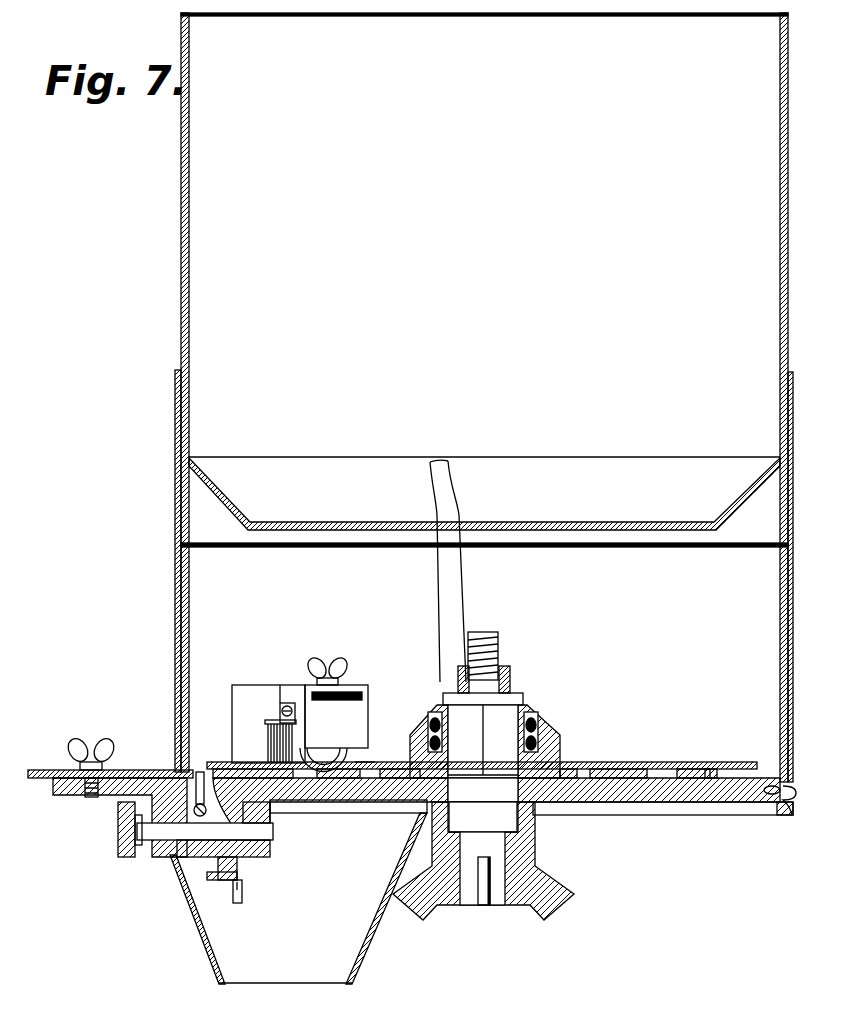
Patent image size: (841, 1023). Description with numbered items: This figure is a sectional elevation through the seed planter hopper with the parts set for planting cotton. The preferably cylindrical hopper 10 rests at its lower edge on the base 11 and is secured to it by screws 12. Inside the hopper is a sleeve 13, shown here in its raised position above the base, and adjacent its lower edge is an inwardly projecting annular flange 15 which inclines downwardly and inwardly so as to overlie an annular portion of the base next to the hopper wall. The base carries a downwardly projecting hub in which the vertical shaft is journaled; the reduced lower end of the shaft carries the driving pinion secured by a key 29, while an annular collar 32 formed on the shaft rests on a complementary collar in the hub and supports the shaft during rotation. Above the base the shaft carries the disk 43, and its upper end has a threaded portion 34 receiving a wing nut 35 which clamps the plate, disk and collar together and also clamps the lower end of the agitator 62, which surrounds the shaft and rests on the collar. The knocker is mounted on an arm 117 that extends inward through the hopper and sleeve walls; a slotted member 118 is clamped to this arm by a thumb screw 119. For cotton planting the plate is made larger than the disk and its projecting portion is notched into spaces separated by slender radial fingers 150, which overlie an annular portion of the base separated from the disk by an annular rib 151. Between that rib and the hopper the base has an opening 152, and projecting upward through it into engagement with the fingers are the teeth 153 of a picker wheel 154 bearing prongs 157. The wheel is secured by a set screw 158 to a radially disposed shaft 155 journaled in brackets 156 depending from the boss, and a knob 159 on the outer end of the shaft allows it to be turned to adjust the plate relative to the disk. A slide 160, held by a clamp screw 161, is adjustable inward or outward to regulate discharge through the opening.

The hopper 10 is at (176, 575).
The base 11 is at (637, 793).
The screws 12 is at (800, 807).
The sleeve 13 is at (182, 290).
The inwardly projecting annular flange 15 is at (648, 515).
The key 29 is at (483, 880).
The annular collar 32 is at (538, 727).
The threaded portion 34 is at (500, 640).
The nut 35 is at (505, 673).
The disk 43 is at (362, 762).
The agitator 62 is at (455, 595).
The arm 117 is at (347, 692).
The slotted member 118 is at (355, 717).
The thumb screw 119 is at (330, 662).
The fingers 150 is at (210, 763).
The annular rib 151 is at (250, 760).
The opening 152 is at (195, 767).
The teeth 153 is at (235, 760).
The picker wheel 154 is at (237, 860).
The shaft 155 is at (268, 832).
The brackets 156 is at (178, 853).
The prongs 157 is at (238, 884).
The set screw 158 is at (198, 818).
The knob 159 is at (118, 835).
The slide 160 is at (125, 773).
The clamp screw 161 is at (92, 762).